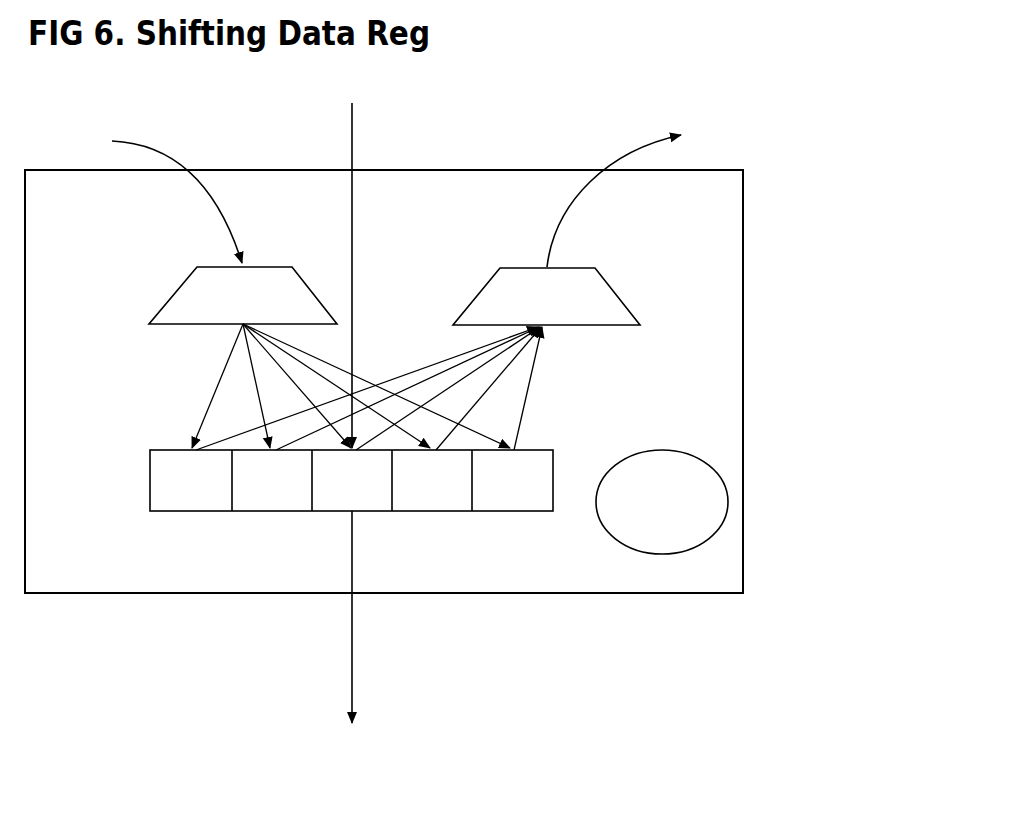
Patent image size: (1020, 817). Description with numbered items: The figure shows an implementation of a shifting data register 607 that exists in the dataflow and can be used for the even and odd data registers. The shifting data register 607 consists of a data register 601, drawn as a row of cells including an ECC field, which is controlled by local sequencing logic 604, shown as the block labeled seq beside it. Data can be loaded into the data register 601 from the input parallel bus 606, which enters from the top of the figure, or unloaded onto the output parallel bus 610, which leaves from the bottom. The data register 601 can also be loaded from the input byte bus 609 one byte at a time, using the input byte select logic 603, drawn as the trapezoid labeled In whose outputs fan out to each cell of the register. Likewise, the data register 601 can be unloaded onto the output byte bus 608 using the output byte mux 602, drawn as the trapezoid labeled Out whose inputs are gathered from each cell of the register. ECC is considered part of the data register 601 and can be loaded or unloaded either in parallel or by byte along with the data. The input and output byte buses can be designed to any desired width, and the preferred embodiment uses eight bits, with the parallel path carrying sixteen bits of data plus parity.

The data register 601 is at (148, 480).
The output byte mux 602 is at (622, 297).
The input byte select logic 603 is at (172, 296).
The local sequencing logic 604 is at (730, 502).
The input parallel bus 606 is at (357, 257).
The shifting data register 607 is at (747, 380).
The output byte bus 608 is at (628, 132).
The input byte bus 609 is at (175, 157).
The output parallel bus 610 is at (354, 644).